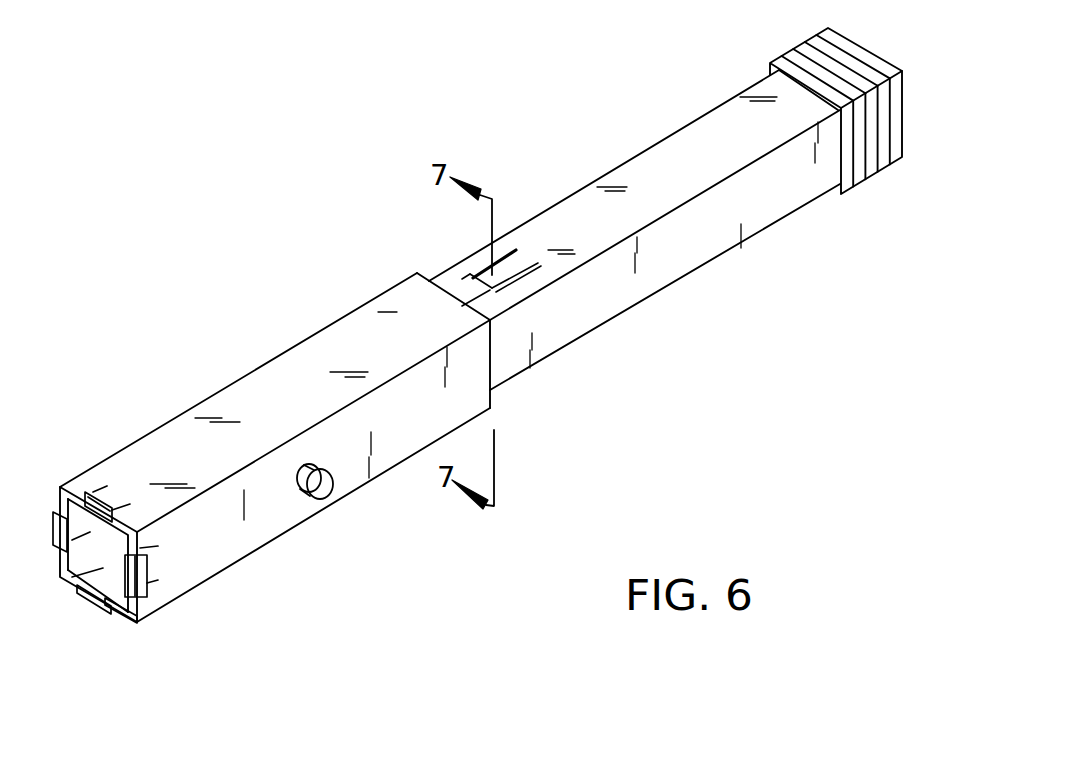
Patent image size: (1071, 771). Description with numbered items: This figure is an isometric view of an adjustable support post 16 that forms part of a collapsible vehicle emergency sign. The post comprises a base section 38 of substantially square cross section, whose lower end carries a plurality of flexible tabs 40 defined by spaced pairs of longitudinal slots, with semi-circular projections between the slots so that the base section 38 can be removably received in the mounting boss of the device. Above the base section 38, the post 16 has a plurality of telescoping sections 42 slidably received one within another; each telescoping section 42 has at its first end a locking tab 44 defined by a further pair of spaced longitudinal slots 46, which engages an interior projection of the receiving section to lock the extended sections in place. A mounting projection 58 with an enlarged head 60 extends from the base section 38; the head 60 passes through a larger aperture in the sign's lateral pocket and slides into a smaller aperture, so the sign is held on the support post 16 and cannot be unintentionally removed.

The adjustable support post 16 is at (628, 157).
The base section 38 is at (302, 370).
The flexible tabs 40 is at (138, 585).
The telescoping sections 42 is at (796, 57).
The locking tab 44 is at (508, 270).
The longitudinal slots 46 is at (505, 280).
The mounting projection 58 is at (320, 496).
The enlarged head 60 is at (320, 470).